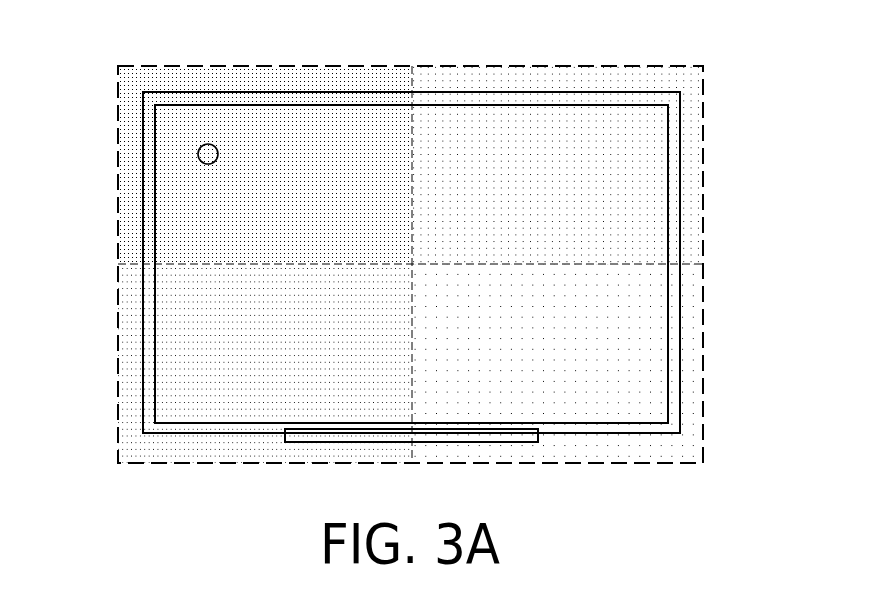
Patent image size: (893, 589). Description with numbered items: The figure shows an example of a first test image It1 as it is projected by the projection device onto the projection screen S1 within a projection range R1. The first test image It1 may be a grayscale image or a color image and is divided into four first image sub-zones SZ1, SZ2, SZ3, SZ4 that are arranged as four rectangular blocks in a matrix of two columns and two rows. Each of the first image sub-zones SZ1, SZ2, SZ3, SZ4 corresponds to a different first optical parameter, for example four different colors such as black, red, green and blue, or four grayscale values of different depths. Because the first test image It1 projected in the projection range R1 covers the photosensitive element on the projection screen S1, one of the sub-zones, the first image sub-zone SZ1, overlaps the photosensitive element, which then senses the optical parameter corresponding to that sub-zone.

The projection range R1 is at (540, 68).
The first test image It1 is at (705, 157).
The first image sub-zone SZ1 is at (130, 211).
The first image sub-zone SZ2 is at (688, 212).
The first image sub-zone SZ3 is at (130, 388).
The first image sub-zone SZ4 is at (690, 311).
The projection screen S1 is at (680, 376).